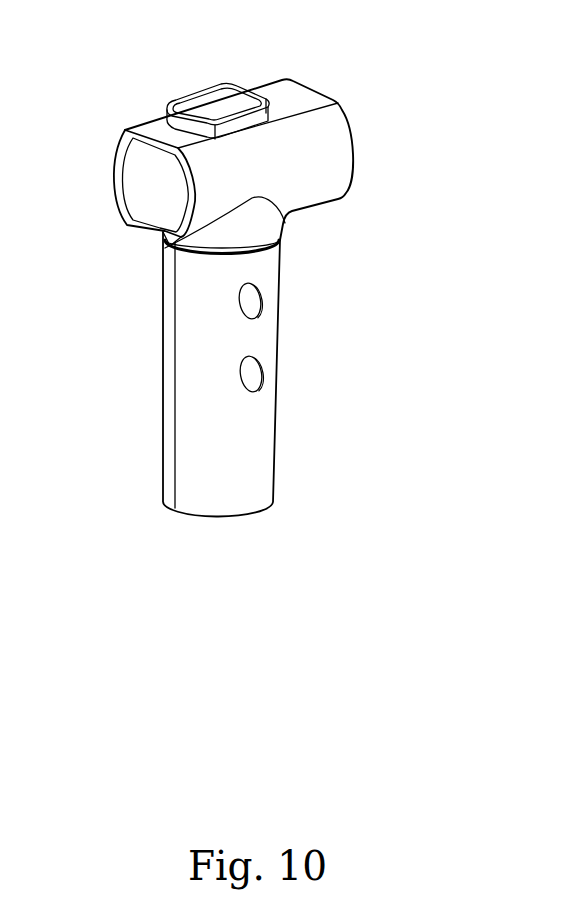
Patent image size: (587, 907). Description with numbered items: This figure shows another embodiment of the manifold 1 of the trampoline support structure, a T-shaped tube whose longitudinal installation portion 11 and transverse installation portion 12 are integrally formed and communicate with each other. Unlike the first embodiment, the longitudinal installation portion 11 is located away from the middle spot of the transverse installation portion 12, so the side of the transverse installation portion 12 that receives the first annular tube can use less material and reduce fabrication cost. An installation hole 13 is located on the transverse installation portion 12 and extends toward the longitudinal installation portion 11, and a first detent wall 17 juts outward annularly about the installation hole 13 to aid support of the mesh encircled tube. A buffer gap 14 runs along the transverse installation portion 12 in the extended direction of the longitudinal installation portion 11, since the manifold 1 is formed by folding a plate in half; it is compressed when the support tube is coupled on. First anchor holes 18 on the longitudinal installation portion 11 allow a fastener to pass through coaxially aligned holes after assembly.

The manifold 1 is at (256, 267).
The longitudinal installation portion 11 is at (265, 331).
The transverse installation portion 12 is at (347, 150).
The installation hole 13 is at (213, 117).
The buffer gap 14 is at (176, 411).
The first detent wall 17 is at (247, 123).
The first anchor hole 18 is at (250, 378).